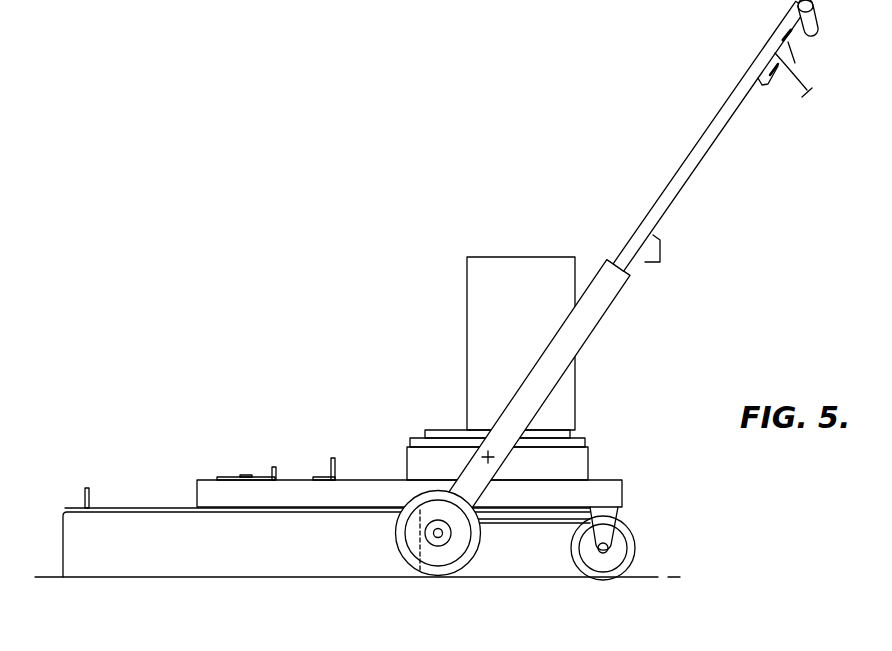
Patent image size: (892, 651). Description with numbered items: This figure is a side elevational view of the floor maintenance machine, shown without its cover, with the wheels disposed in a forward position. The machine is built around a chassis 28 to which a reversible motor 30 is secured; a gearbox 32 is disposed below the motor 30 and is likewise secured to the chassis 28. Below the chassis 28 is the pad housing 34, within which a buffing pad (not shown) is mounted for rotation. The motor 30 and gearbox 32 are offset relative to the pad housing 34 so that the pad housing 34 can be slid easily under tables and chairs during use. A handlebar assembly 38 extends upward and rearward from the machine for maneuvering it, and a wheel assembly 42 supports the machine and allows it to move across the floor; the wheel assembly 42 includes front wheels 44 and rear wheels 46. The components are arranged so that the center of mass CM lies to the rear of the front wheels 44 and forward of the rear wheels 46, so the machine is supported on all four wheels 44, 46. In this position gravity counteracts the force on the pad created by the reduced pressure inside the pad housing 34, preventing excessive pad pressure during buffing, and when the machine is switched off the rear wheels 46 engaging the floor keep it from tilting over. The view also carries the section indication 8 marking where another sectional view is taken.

The chassis 28 is at (295, 495).
The reversible motor 30 is at (480, 283).
The gearbox 32 is at (410, 460).
The pad housing 34 is at (175, 522).
The handlebar assembly 38 is at (622, 184).
The wheel assembly 42 is at (482, 603).
The front wheels 44 is at (440, 578).
The rear wheels 46 is at (618, 579).
The section line 8- 8 is at (522, 463).
The center of mass CM is at (486, 452).